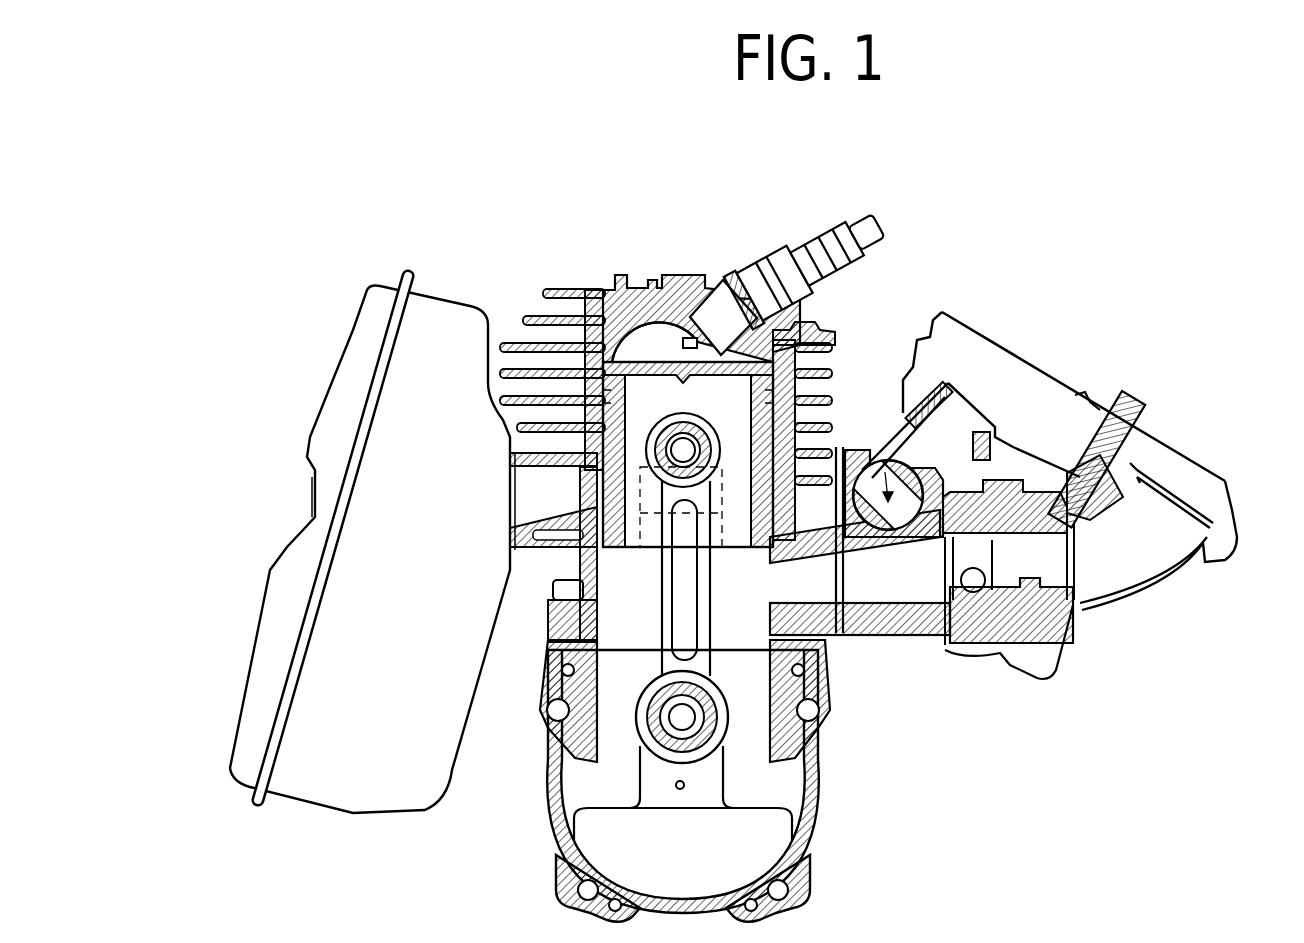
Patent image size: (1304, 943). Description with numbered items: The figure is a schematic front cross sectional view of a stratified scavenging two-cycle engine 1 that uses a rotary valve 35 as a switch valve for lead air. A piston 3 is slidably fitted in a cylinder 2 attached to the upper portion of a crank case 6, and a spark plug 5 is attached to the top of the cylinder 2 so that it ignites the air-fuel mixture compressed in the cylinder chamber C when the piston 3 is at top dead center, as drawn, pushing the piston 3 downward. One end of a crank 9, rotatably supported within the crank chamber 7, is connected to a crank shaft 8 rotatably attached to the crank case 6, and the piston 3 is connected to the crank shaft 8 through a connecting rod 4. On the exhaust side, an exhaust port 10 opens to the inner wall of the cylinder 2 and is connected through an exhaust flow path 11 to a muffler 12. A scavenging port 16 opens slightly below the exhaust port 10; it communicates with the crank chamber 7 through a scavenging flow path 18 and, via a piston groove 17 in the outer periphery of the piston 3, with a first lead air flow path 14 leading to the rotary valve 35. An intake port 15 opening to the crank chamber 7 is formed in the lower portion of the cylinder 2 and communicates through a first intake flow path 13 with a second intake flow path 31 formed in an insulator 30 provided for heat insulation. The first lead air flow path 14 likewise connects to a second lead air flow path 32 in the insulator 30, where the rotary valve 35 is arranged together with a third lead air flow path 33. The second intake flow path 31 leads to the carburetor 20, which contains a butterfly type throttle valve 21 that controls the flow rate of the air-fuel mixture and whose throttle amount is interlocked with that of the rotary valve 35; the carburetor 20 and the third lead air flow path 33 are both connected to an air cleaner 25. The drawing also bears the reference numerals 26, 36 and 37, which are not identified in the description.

The stratified scavenging two-cycle engine 1 is at (678, 219).
The cylinder 2 is at (800, 330).
The piston 3 is at (660, 330).
The cylinder chamber C is at (656, 318).
The connecting rod 4 is at (563, 768).
The spark plug 5 is at (805, 265).
The crank case 6 is at (555, 815).
The crank chamber 7 is at (782, 778).
The crank shaft 8 is at (793, 857).
The crank 9 is at (640, 857).
The exhaust port 10 is at (587, 483).
The exhaust flow path 11 is at (547, 497).
The muffler 12 is at (438, 298).
The first intake flow path 13 is at (840, 590).
The first lead air flow path 14 is at (845, 505).
The intake port 15 is at (835, 640).
The scavenging port 16 is at (648, 635).
The piston groove 17 is at (743, 515).
The scavenging flow path 18 is at (547, 725).
The carburetor 20 is at (995, 686).
The butterfly type throttle valve 21 is at (973, 650).
The air cleaner 25 is at (1073, 380).
The intake elbow 26 is at (1113, 570).
The insulator 30 is at (882, 633).
The second intake flow path 31 is at (917, 582).
The second lead air flow path 32 is at (876, 470).
The third lead air flow path 33 is at (1067, 377).
The rotary valve 35 is at (953, 427).
The throttle lever 36 is at (1040, 400).
The adjusting screw 37 is at (1163, 443).